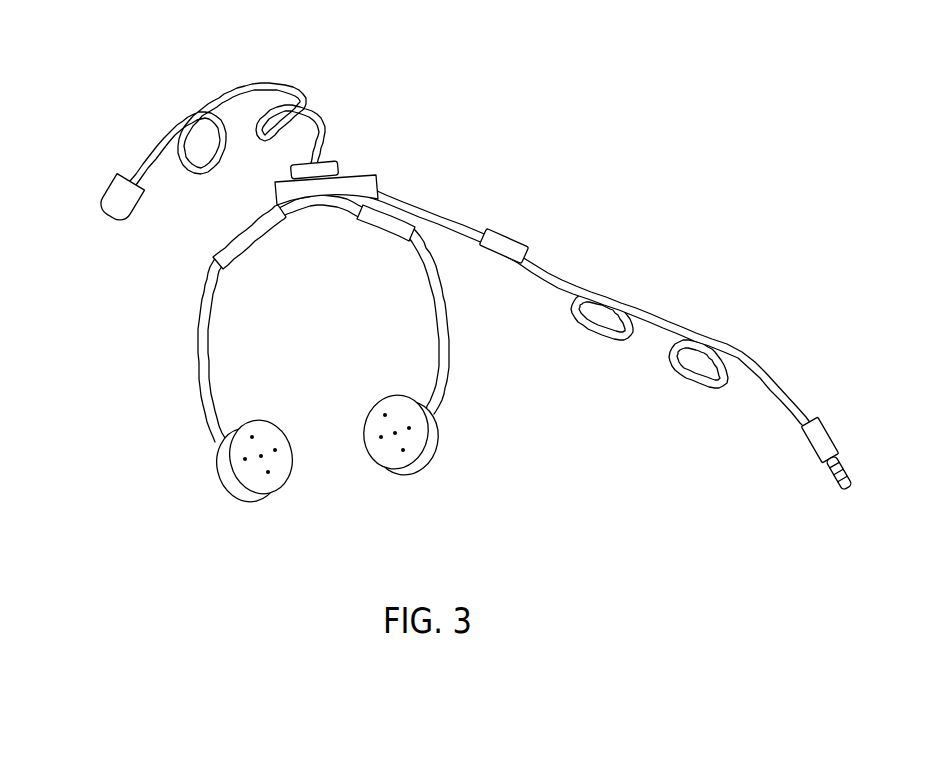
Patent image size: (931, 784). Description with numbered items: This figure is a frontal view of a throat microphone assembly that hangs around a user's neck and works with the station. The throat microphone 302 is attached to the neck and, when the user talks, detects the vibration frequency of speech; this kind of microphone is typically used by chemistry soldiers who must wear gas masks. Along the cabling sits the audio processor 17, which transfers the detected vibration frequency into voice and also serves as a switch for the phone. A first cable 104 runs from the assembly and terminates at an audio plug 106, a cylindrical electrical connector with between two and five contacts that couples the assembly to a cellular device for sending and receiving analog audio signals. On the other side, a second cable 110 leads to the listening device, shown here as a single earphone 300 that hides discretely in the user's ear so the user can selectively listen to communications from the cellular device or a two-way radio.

The second cable 110 is at (240, 85).
The earphone 300 is at (102, 202).
The audio processor 17 is at (512, 235).
The first cable 104 is at (642, 300).
The audio plug 106 is at (817, 453).
The throat microphone 302 is at (228, 462).